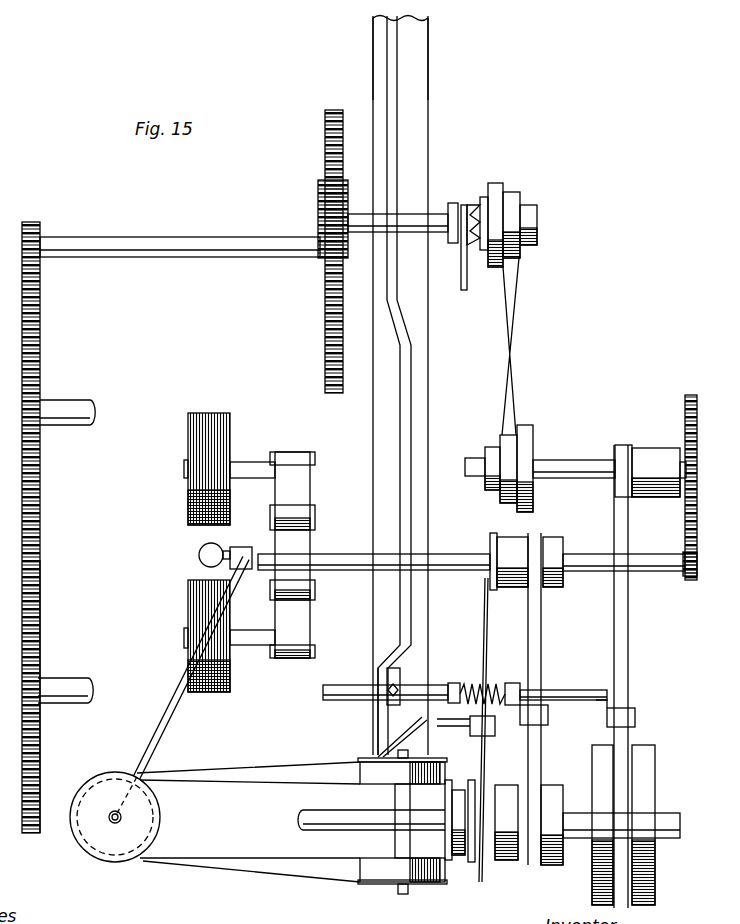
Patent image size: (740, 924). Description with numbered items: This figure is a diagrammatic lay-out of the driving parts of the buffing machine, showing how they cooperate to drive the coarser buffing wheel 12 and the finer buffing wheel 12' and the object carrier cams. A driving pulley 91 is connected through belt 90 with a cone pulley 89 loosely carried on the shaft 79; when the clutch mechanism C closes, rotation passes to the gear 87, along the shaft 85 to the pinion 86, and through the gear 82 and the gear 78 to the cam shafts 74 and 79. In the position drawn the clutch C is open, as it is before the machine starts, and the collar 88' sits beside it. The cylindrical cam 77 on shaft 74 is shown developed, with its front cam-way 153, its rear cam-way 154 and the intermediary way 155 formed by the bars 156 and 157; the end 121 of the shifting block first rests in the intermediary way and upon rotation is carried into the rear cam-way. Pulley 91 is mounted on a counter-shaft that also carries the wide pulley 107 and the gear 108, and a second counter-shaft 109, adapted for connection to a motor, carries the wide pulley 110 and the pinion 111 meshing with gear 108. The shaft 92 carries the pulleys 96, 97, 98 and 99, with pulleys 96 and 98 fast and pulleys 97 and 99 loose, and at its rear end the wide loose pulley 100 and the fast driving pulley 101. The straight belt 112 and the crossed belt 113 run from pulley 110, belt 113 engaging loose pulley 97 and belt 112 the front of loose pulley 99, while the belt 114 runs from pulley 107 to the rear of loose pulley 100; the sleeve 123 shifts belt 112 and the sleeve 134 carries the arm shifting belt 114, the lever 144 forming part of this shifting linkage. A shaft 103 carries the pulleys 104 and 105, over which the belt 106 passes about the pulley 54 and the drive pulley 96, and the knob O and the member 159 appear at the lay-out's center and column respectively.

The buffing wheel 12 is at (229, 637).
The buffing wheel 12' is at (229, 469).
The pulley 54 is at (161, 818).
The shaft 74 is at (92, 690).
The cylindrical cam 77 is at (404, 386).
The gear 78 is at (40, 630).
The shaft 79 is at (95, 407).
The gear 82 is at (42, 330).
The shaft 85 is at (223, 238).
The pinion 86 is at (318, 190).
The gear 87 is at (325, 122).
The shaft and collar 88' is at (407, 206).
The cone pulley 89 is at (522, 194).
The belt 90 is at (514, 298).
The driving pulley 91 is at (530, 427).
The shaft 92 is at (320, 823).
The pulley 96 is at (462, 862).
The pulley 97 is at (480, 863).
The pulley 98 is at (504, 786).
The pulley 99 is at (558, 786).
The wide pulley 100 is at (594, 896).
The driving pulley 101 is at (652, 896).
The shaft 103 is at (403, 894).
The pulley 104 is at (402, 804).
The pulley 105 is at (402, 871).
The belt 106 is at (570, 460).
The wide pulley 107 is at (650, 459).
The gear 108 is at (686, 402).
The counter-shaft 109 is at (597, 570).
The wide pulley 110 is at (556, 542).
The pinion 111 is at (696, 606).
The belt 112 is at (541, 635).
The belt 113 is at (484, 627).
The belt 114 is at (628, 634).
The end 121 is at (400, 676).
The sleeve 123 is at (548, 718).
The sleeve 134 is at (635, 718).
The lever 144 is at (478, 738).
The front cam-way 153 is at (385, 45).
The rear cam-way 154 is at (413, 376).
The intermediary cam-way 155 is at (378, 736).
The bar 156 is at (388, 752).
The bar 157 is at (422, 740).
The column inner wall 159 is at (385, 265).
The clutch mechanism C is at (472, 200).
The knob O is at (183, 680).